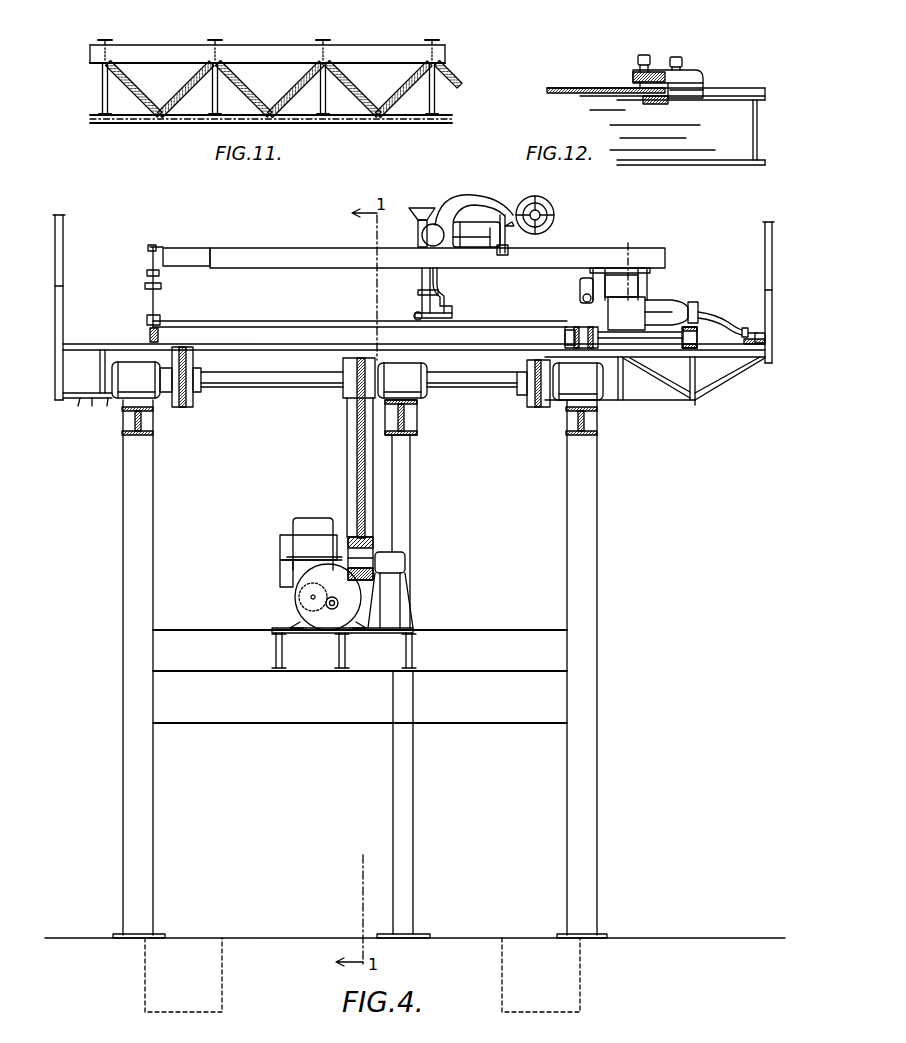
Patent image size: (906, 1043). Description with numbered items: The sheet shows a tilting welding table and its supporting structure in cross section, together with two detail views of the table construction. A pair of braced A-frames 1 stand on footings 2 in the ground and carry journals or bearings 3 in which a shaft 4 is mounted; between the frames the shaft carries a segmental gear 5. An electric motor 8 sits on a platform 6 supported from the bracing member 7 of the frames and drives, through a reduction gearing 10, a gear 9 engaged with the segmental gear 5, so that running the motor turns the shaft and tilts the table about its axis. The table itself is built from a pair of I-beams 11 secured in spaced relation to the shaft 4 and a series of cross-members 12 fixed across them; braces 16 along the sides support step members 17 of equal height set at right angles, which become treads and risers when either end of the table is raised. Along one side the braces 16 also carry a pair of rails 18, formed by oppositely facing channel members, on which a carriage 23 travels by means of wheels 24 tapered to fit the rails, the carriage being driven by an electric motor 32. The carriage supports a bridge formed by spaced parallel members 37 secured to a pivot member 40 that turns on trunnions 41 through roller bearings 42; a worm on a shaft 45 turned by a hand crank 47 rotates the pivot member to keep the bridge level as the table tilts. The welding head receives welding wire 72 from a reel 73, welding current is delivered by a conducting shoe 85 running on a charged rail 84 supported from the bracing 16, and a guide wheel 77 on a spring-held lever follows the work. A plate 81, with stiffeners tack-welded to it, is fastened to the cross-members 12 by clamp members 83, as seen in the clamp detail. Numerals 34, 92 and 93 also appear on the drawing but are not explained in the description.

In FIG. 4, the A-frames 1 is at (123, 575).
In FIG. 4, the footings 2 is at (113, 934).
In FIG. 4, the journals or bearings 3 is at (124, 372).
In FIG. 4, the shaft 4 is at (300, 389).
In FIG. 4, the segmental gear 5 is at (352, 492).
In FIG. 4, the platform 6 is at (414, 628).
In FIG. 4, the bracing member 7 is at (224, 630).
In FIG. 4, the electric motor 8 is at (356, 605).
In FIG. 4, the gear 9 is at (376, 553).
In FIG. 4, the reduction gearing 10 is at (296, 590).
In FIG. 4, the I-beams 11 is at (185, 400).
In FIG. 11, the cross-members 12 is at (428, 44).
In FIG. 12, the cross-members 12 is at (734, 86).
In FIG. 4, the cross-members 12 is at (275, 316).
In FIG. 11, the braces 16 is at (248, 91).
In FIG. 4, the braces 16 is at (74, 399).
In FIG. 11, the step members 17 is at (128, 72).
In FIG. 4, the rails 18 is at (565, 335).
In FIG. 4, the carriage 23 is at (641, 336).
In FIG. 4, the wheels 24 is at (579, 325).
In FIG. 4, the electric motor 32 is at (661, 305).
In FIG. 4, the bracket 34 is at (760, 340).
In FIG. 4, the spaced parallel members 37 is at (276, 257).
In FIG. 4, the pivot member 40 is at (628, 270).
In FIG. 4, the trunnions 41 is at (582, 288).
In FIG. 4, the roller bearings 42 is at (193, 248).
In FIG. 4, the shaft 45 is at (583, 299).
In FIG. 4, the hand crank 47 is at (148, 327).
In FIG. 4, the welding wire 72 is at (473, 189).
In FIG. 4, the reel 73 is at (556, 215).
In FIG. 4, the guide wheel 77 is at (416, 314).
In FIG. 12, the plate 81 is at (630, 70).
In FIG. 12, the clamp members 83 is at (688, 68).
In FIG. 12, the charged rail 84 is at (652, 62).
In FIG. 4, the conducting shoe 85 is at (742, 328).
In FIG. 4, the footing 92 is at (145, 977).
In FIG. 4, the lever 93 is at (504, 256).